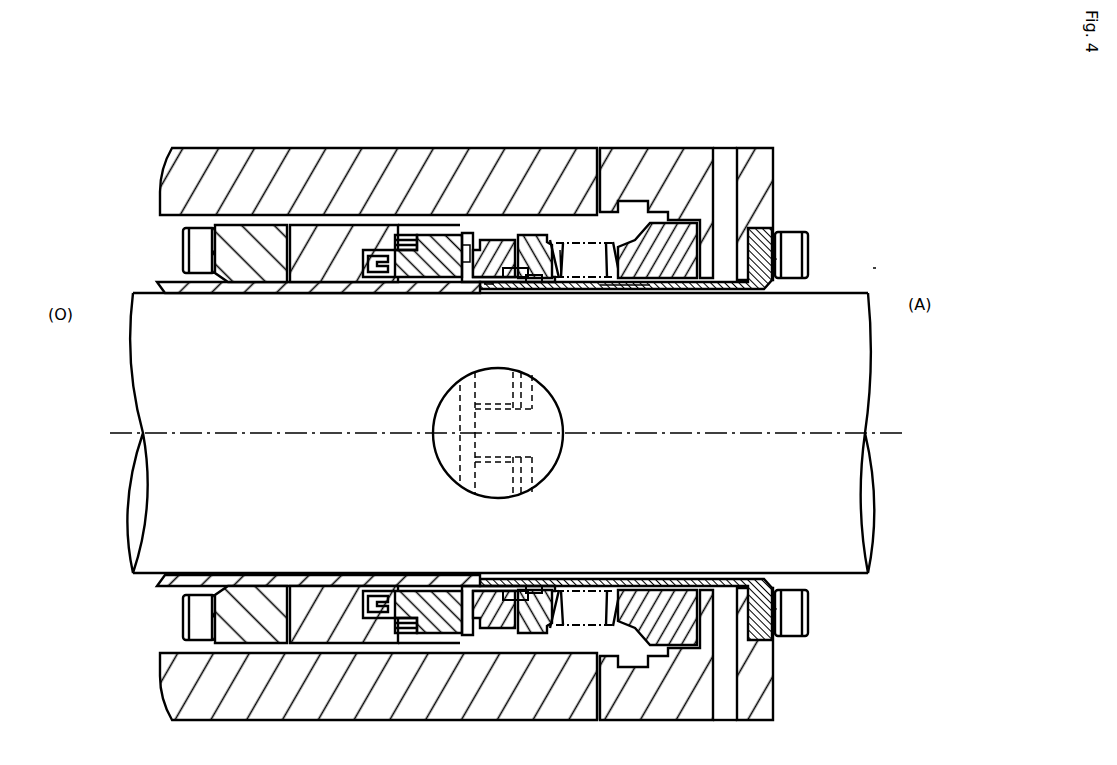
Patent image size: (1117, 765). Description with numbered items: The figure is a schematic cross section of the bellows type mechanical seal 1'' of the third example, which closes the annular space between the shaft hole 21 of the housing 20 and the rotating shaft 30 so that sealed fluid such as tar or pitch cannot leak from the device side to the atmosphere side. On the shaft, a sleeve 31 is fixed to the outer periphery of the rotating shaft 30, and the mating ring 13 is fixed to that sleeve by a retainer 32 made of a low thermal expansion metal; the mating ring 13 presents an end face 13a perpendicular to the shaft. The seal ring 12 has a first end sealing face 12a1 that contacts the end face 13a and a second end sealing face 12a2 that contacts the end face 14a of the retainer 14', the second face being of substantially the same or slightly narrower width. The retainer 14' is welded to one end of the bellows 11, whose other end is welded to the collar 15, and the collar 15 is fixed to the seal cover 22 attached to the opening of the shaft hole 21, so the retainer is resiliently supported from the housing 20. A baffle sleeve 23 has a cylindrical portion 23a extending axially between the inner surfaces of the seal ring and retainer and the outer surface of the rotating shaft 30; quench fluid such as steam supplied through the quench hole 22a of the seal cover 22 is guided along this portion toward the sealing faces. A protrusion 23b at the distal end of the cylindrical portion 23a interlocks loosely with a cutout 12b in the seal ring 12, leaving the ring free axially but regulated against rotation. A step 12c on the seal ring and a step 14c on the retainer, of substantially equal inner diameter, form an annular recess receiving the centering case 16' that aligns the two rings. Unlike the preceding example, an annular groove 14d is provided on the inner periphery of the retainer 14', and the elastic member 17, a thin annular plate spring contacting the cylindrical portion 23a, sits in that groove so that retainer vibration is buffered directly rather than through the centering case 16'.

The bellows type mechanical seal 1'' is at (912, 260).
The bellows 11 is at (582, 243).
The seal ring 12 is at (468, 233).
The first end sealing face 12a1 is at (438, 262).
The second end sealing face 12a2 is at (566, 282).
The cutout 12b is at (458, 268).
The step 12c is at (505, 590).
The mating ring 13 is at (420, 234).
The end face 13a is at (462, 236).
The retainer 14' is at (569, 189).
The end face 14a is at (520, 239).
The step 14c is at (527, 592).
The annular groove 14d is at (530, 586).
The collar 15 is at (652, 223).
The centering case 16' is at (515, 313).
The elastic member 17 is at (537, 284).
The housing 20 is at (132, 173).
The shaft hole 21 is at (121, 258).
The seal cover 22 is at (680, 182).
The quench hole 22a is at (742, 165).
The baffle sleeve 23 is at (755, 289).
The cylindrical portion 23a is at (625, 289).
The protrusion 23b is at (490, 289).
The rotating shaft 30 is at (133, 390).
The sleeve 31 is at (257, 285).
The retainer 32 is at (330, 226).